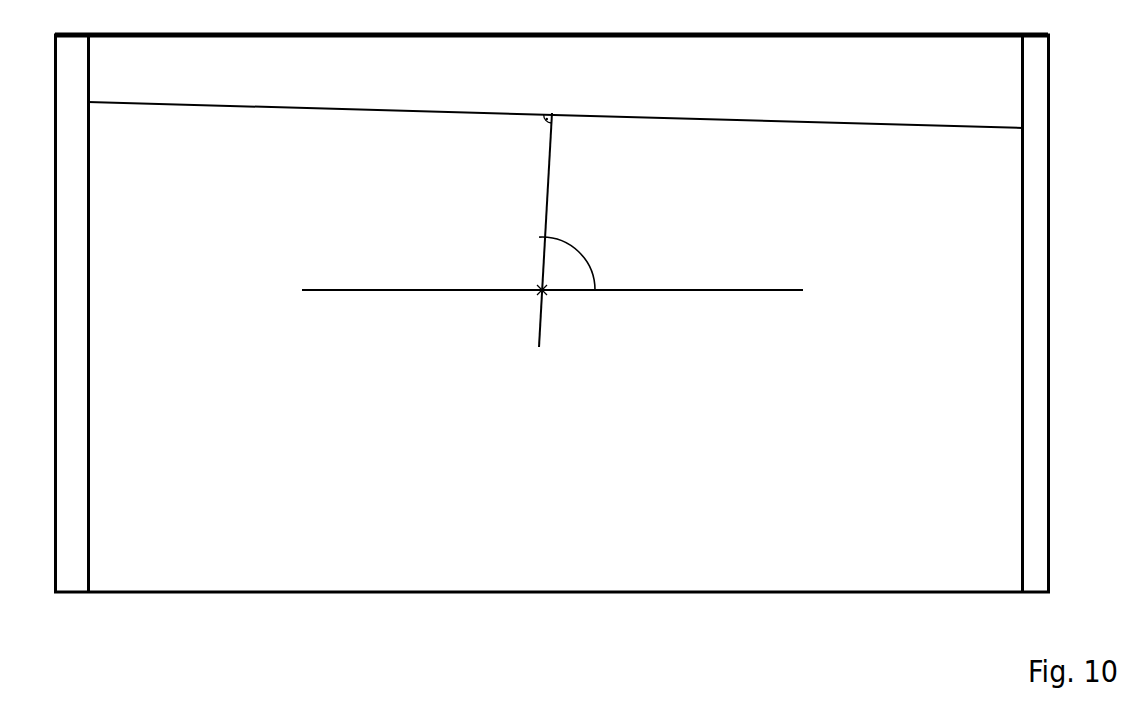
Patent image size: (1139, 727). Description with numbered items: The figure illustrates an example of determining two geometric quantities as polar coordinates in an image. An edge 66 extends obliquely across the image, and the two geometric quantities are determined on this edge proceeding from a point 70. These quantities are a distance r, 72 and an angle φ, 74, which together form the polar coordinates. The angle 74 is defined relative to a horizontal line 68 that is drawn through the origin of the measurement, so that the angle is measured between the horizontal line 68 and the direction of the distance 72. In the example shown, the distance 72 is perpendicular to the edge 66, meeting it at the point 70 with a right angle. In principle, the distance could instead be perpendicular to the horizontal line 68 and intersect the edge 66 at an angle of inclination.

The edge 66 is at (880, 125).
The horizontal line 68 is at (765, 290).
The point 70 is at (552, 115).
The distance r 72 is at (549, 190).
The angle φ 74 is at (580, 255).